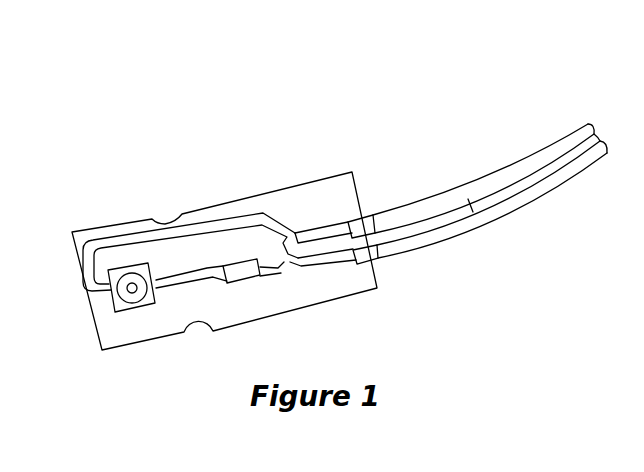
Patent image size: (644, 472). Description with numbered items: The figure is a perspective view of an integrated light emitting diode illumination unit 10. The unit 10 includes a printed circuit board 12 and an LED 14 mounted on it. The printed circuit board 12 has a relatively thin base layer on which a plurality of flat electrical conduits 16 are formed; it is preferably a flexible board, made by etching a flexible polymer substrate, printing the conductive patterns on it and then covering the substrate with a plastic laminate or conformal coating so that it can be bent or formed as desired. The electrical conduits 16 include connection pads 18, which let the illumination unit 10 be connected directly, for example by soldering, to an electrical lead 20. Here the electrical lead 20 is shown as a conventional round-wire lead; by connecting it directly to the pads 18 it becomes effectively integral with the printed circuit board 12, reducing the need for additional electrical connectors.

The light emitting diode illumination unit 10 is at (305, 149).
The printed circuit board 12 is at (172, 338).
The LED 14 is at (116, 305).
The electrical conduits 16 is at (170, 268).
The connection pads 18 is at (284, 258).
The electrical lead 20 is at (500, 220).